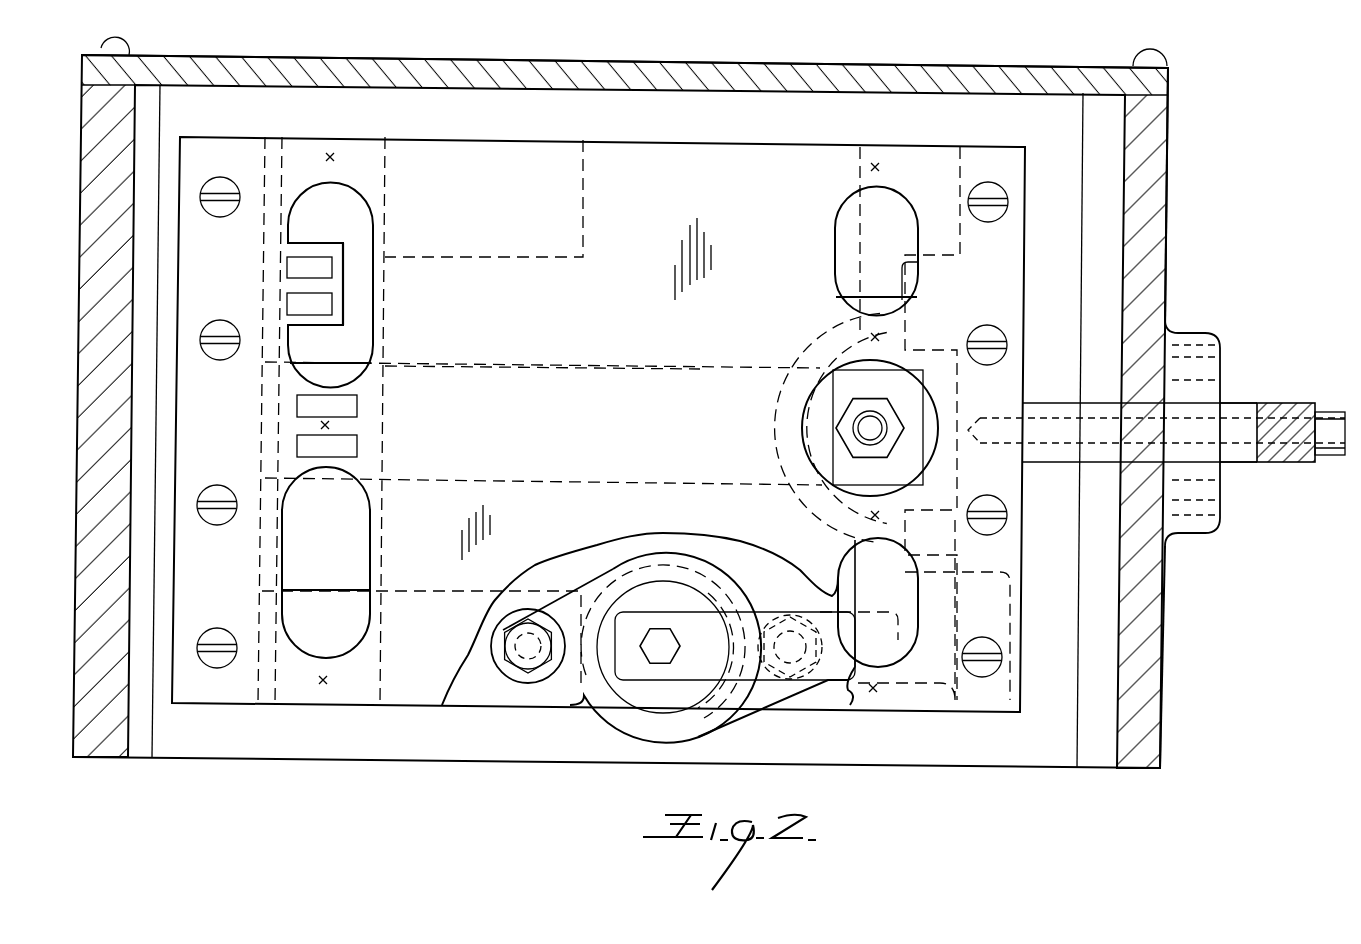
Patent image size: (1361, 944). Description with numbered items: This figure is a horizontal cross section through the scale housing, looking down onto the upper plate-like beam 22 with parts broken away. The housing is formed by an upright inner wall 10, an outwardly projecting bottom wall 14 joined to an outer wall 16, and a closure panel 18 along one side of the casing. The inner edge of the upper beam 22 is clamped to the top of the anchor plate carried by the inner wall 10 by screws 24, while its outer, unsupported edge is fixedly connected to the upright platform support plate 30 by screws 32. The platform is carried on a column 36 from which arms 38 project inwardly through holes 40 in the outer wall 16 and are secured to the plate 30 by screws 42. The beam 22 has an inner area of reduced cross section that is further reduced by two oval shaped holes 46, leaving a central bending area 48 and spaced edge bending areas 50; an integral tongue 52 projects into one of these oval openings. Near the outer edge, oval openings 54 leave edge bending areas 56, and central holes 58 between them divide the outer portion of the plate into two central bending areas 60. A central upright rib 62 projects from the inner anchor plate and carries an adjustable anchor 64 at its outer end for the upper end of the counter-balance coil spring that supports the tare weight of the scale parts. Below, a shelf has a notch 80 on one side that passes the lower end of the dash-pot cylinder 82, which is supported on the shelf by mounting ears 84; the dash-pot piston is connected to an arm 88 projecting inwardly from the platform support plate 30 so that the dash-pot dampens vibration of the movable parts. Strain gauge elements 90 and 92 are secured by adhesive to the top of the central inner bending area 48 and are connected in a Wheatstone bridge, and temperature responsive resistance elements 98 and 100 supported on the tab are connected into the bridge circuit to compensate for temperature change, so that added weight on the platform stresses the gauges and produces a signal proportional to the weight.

The upright inner wall 10 is at (95, 308).
The bottom wall 14 is at (320, 745).
The outer wall 16 is at (1160, 187).
The closure panel 18 is at (676, 70).
The upper plate-like beam 22 is at (748, 157).
The screws 24 is at (214, 632).
The upright platform support plate 30 is at (960, 465).
The screws 32 is at (985, 330).
The column 36 is at (1270, 405).
The arms 38 is at (1238, 458).
The holes 40 is at (1195, 355).
The screws 42 is at (1333, 457).
The oval shaped holes 46 is at (380, 234).
The central bending area 48 is at (335, 425).
The edge bending areas 50 is at (336, 155).
The integral tongue 52 is at (340, 320).
The oval openings 54 is at (836, 256).
The edge bending areas 56 is at (862, 170).
The central holes 58 is at (806, 428).
The central bending areas 60 is at (862, 336).
The central upright rib 62 is at (580, 365).
The adjustable anchor 64 is at (842, 437).
The notch 80 is at (728, 612).
The dash-pot cylinder 82 is at (632, 688).
The mounting ears 84 is at (765, 690).
The arm 88 is at (652, 617).
The strain gauge element 90 is at (357, 407).
The strain gauge element 92 is at (357, 447).
The temperature responsive resistance element 98 is at (292, 267).
The temperature responsive resistance element 100 is at (297, 303).